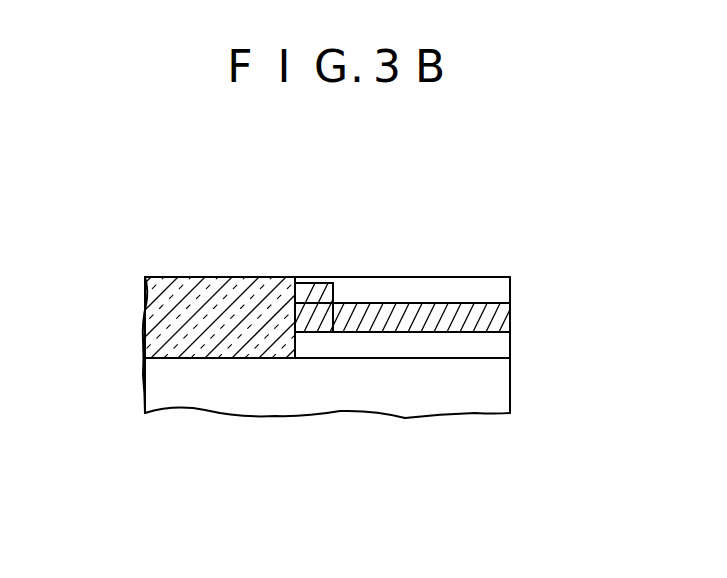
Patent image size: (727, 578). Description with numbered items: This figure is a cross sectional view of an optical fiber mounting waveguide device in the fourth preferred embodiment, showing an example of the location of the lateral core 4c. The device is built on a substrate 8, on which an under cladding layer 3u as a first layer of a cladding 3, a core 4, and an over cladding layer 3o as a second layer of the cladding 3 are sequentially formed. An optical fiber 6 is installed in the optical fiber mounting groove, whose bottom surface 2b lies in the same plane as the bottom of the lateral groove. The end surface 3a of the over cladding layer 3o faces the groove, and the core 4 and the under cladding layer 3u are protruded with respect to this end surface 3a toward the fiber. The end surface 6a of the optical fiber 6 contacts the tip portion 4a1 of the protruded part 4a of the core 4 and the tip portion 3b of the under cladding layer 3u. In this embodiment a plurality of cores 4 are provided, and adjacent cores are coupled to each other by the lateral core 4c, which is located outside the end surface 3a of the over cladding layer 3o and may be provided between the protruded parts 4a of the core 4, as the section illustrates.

The cladding 3 is at (530, 264).
The over cladding layer 3o is at (450, 277).
The under cladding layer 3u is at (453, 345).
The end surface of the over cladding layer 3a is at (338, 290).
The tip portion of the under cladding layer 3b is at (296, 343).
The core 4 is at (510, 317).
The protruded part of the core 4a is at (310, 316).
The tip portion of the protruded part of the core 4a1 is at (323, 286).
The lateral core 4c is at (303, 290).
The optical fiber 6 is at (216, 286).
The end surface of the optical fiber 6a is at (295, 346).
The substrate 8 is at (488, 386).
The bottom surface of the optical fiber mounting groove 2b is at (187, 363).